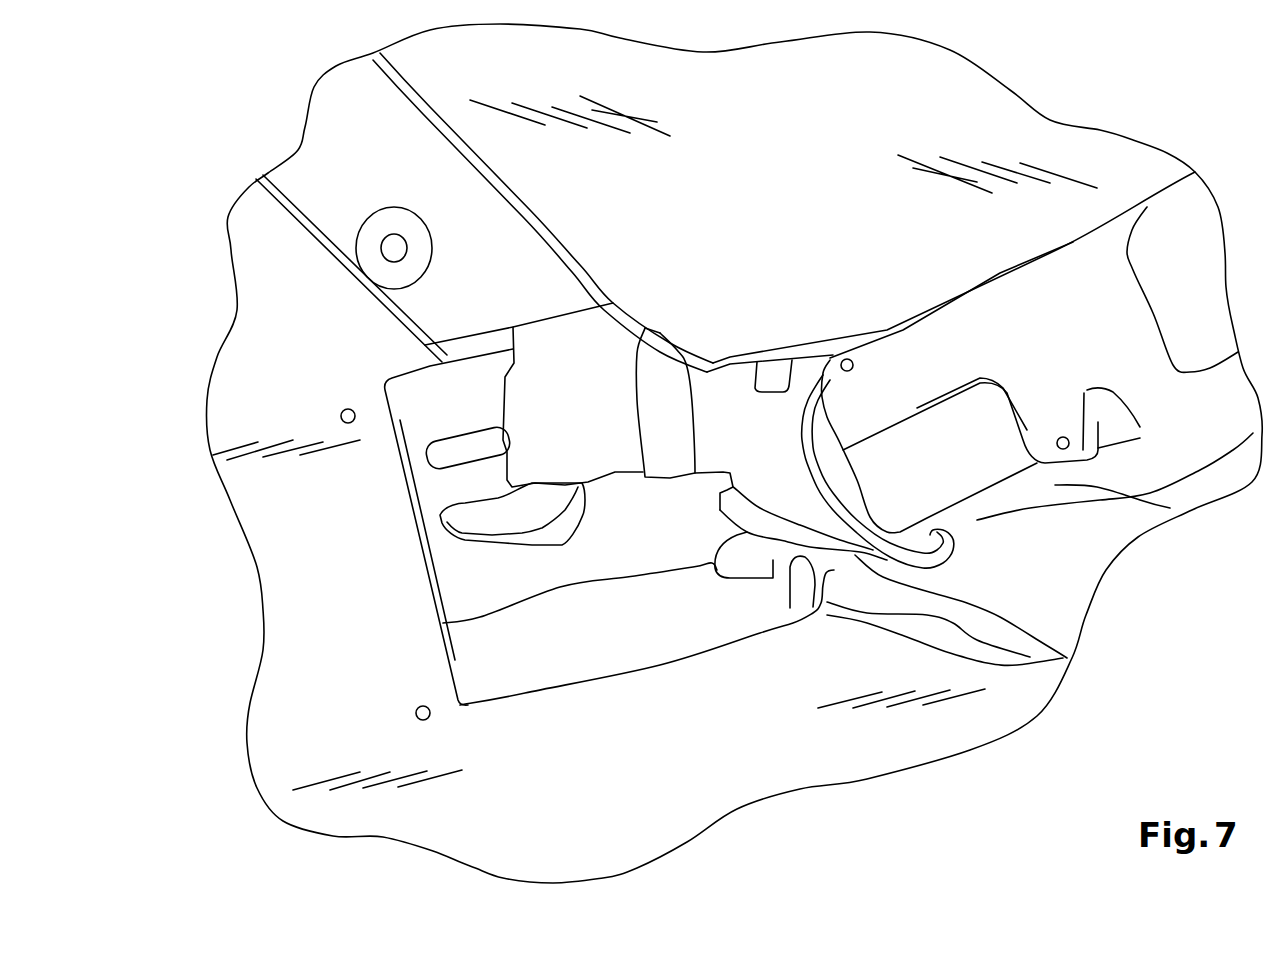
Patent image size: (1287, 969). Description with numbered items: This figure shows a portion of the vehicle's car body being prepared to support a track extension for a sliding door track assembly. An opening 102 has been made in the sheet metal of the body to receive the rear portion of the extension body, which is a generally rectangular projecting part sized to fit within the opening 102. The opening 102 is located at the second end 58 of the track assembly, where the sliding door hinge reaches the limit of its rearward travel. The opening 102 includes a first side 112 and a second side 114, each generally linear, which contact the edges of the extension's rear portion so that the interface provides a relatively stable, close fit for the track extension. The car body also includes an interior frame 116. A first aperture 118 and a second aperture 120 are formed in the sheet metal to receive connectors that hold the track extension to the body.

The second end 58 is at (760, 537).
The opening 102 is at (355, 501).
The first side 112 is at (420, 603).
The second side 114 is at (525, 693).
The interior frame 116 is at (413, 410).
The first aperture 118 is at (340, 417).
The second aperture 120 is at (416, 713).